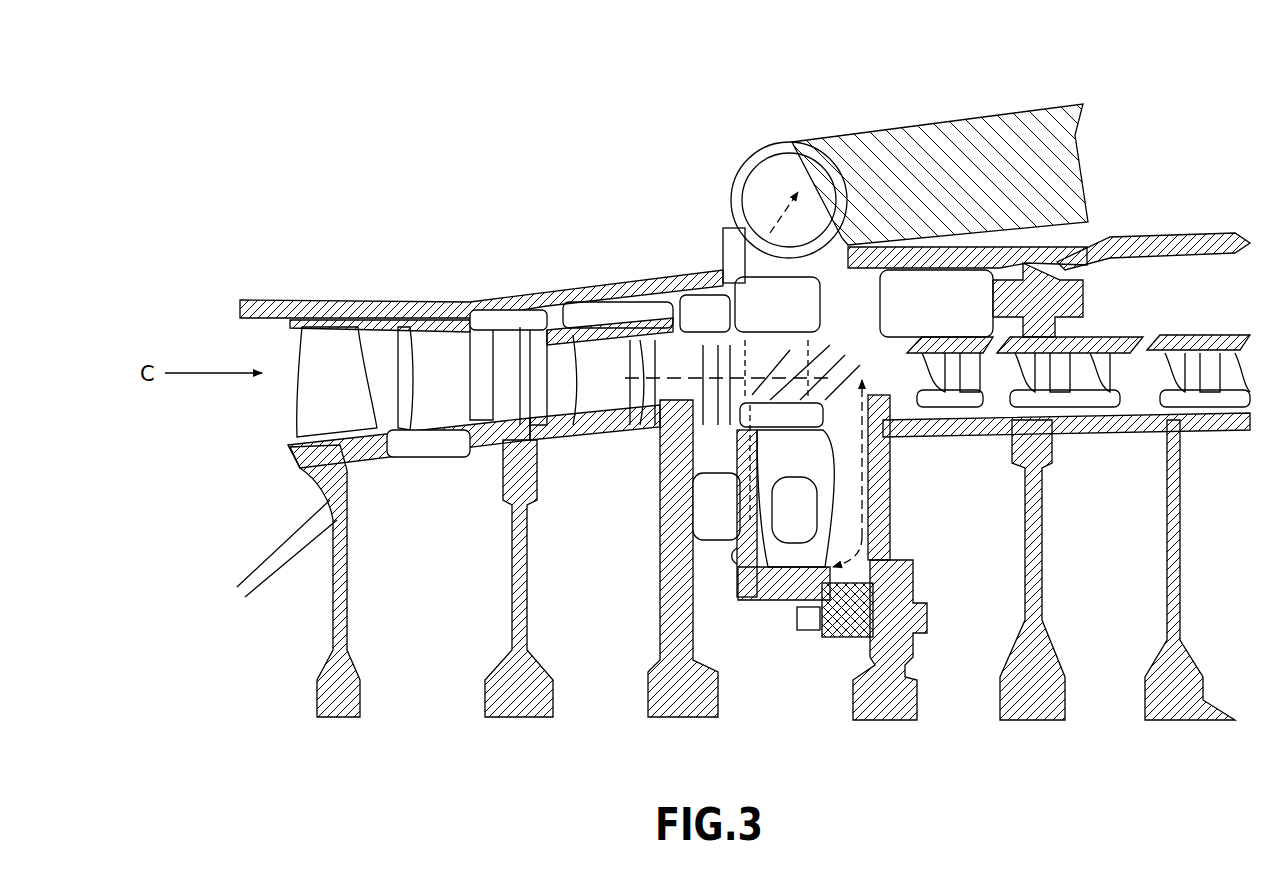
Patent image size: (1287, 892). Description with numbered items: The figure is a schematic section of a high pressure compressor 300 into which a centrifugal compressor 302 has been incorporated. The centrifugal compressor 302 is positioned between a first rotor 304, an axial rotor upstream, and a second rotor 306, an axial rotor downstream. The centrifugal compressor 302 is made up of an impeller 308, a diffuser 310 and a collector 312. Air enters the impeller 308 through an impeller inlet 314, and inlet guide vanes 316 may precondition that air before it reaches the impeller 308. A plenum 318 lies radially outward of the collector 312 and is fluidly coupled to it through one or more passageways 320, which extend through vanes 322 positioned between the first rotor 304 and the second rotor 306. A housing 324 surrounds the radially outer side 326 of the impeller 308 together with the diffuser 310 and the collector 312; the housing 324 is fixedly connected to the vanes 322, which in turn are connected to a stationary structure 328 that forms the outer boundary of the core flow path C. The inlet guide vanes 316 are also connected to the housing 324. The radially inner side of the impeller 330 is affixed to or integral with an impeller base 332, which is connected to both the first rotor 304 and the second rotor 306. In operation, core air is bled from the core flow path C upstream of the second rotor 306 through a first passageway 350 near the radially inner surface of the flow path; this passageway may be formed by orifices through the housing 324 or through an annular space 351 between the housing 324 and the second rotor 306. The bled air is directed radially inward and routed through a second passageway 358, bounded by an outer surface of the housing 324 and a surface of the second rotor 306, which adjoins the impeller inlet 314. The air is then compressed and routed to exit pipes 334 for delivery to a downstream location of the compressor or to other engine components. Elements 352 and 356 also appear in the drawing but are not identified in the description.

The high pressure compressor 300 is at (352, 198).
The centrifugal compressor 302 is at (840, 125).
The first rotor 304 is at (660, 452).
The second rotor 306 is at (905, 432).
The impeller 308 is at (775, 567).
The diffuser 310 is at (750, 440).
The collector 312 is at (807, 417).
The impeller inlet 314 is at (880, 548).
The inlet guide vanes 316 is at (790, 600).
The plenum 318 is at (805, 300).
The passageways 320 is at (720, 380).
The vanes 322 is at (745, 345).
The housing 324 is at (770, 523).
The radially outer side 326 is at (777, 553).
The stationary structure 328 is at (555, 300).
The radially inner side of the impeller 330 is at (737, 541).
The impeller base 332 is at (735, 565).
The exit pipes 334 is at (740, 165).
The first passageway 350 is at (880, 455).
The annular space 351 is at (890, 427).
The trailing edge 352 is at (845, 352).
The wall 356 is at (893, 520).
The second passageway 358 is at (893, 497).